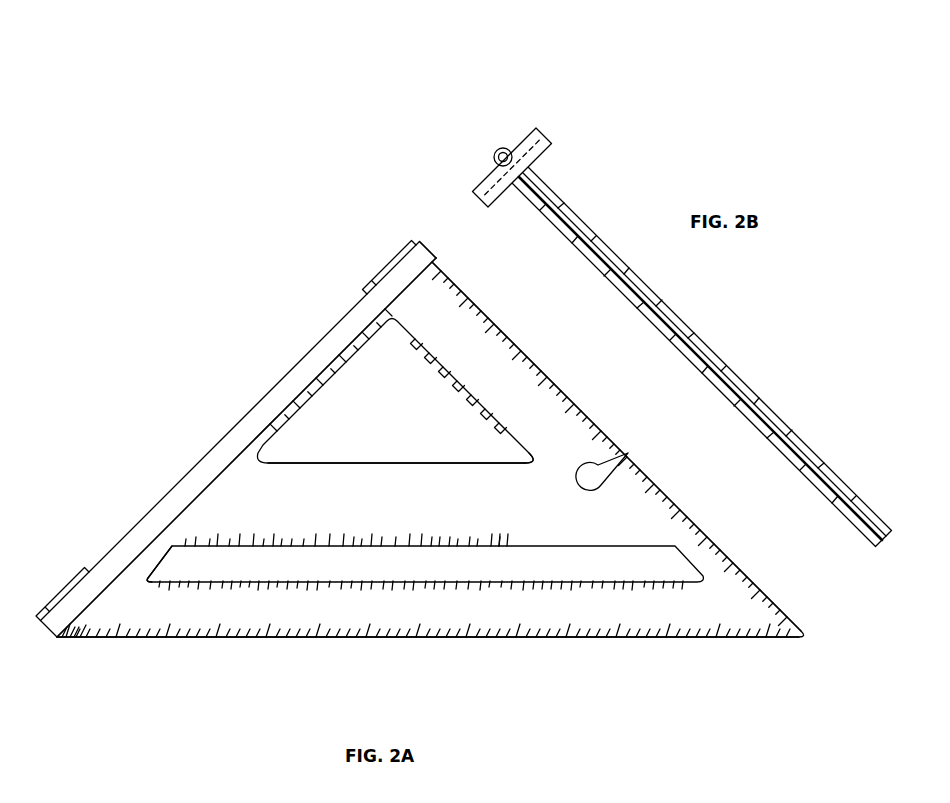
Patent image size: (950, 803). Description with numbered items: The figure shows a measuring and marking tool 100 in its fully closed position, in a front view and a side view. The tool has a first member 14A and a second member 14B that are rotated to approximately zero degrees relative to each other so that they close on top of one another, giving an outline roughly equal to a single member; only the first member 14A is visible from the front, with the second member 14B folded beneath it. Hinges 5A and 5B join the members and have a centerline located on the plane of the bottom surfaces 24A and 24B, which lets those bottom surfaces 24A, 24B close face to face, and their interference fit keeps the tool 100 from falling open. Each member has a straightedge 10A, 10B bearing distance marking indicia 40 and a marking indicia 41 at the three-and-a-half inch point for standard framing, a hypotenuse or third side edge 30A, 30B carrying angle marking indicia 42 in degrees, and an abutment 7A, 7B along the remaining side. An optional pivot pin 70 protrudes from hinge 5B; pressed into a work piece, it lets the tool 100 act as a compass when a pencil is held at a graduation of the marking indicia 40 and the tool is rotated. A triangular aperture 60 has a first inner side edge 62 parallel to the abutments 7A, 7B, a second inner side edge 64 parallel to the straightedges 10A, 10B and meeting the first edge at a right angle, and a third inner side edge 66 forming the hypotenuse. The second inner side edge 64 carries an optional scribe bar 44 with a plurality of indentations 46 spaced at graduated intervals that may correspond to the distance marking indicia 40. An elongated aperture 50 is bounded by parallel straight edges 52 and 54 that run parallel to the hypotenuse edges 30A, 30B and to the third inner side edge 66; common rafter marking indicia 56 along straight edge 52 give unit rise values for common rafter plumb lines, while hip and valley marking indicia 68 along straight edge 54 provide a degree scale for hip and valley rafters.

In FIG. 2A, the tool 100 is at (186, 270).
In FIG. 2B, the tool 100 is at (469, 73).
In FIG. 2A, the straightedge 10A is at (434, 479).
In FIG. 2A, the straightedge 10B is at (780, 600).
In FIG. 2A, the abutment 7A is at (239, 440).
In FIG. 2B, the abutment 7A is at (491, 150).
In FIG. 2A, the abutment 7B is at (221, 440).
In FIG. 2B, the abutment 7B is at (487, 164).
In FIG. 2A, the hinge 5A is at (78, 568).
In FIG. 2B, the hinge 5A is at (431, 128).
In FIG. 2A, the hinge 5B is at (380, 272).
In FIG. 2B, the hinge 5B is at (494, 150).
In FIG. 2A, the pivot pin 70 is at (420, 242).
In FIG. 2A, the first member 14A is at (439, 507).
In FIG. 2B, the first member 14A is at (702, 357).
In FIG. 2B, the second member 14B is at (702, 357).
In FIG. 2B, the bottom surface 24A is at (702, 357).
In FIG. 2B, the bottom surface 24B is at (655, 291).
In FIG. 2A, the triangular aperture 60 is at (394, 417).
In FIG. 2A, the first inner side edge 62 is at (290, 427).
In FIG. 2A, the second inner side edge 64 is at (527, 450).
In FIG. 2A, the third inner side edge 66 is at (392, 446).
In FIG. 2A, the scribe bar 44 is at (444, 386).
In FIG. 2A, the indentations 46 is at (424, 346).
In FIG. 2A, the elongated aperture 50 is at (430, 575).
In FIG. 2A, the straight edge 52 is at (166, 582).
In FIG. 2A, the straight edge 54 is at (236, 547).
In FIG. 2A, the common rafter marking indicia 56 is at (580, 586).
In FIG. 2A, the hip and valley marking indicia 68 is at (501, 535).
In FIG. 2A, the distance marking indicia 40 is at (711, 538).
In FIG. 2A, the marking indicia 41 is at (628, 453).
In FIG. 2A, the angle marking indicia 42 is at (428, 662).
In FIG. 2A, the hypotenuse edge 30A is at (428, 662).
In FIG. 2A, the hypotenuse edge 30B is at (571, 639).